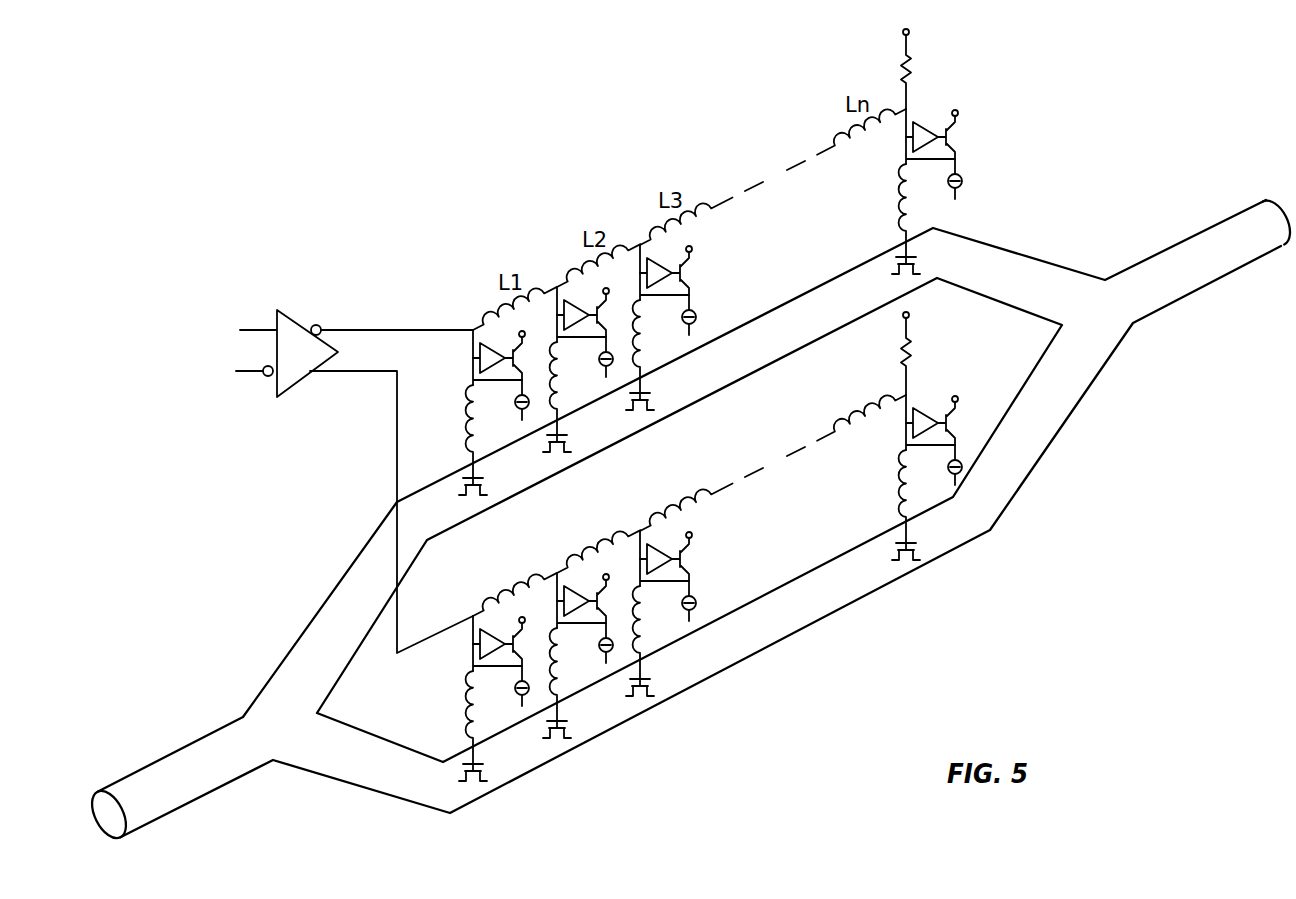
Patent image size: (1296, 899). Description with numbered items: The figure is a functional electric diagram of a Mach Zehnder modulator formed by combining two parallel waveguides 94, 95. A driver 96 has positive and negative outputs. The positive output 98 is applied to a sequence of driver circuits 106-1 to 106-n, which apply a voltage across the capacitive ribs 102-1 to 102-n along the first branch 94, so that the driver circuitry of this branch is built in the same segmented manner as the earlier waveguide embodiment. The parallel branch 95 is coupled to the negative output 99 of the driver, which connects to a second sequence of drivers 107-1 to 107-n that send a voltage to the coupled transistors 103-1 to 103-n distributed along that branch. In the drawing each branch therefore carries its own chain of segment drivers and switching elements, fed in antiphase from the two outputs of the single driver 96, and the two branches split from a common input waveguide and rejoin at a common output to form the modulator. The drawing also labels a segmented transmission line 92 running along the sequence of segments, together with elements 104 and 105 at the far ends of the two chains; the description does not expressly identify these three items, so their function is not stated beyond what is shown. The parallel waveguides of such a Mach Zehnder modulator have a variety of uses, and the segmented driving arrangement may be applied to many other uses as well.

The segmented transmission line 92 is at (766, 180).
The first branch waveguide 94 is at (368, 768).
The parallel branch waveguide 95 is at (1034, 268).
The driver 96 is at (297, 321).
The positive output 98 is at (397, 420).
The negative output 99 is at (393, 330).
The capacitive rib 102-1 is at (484, 776).
The capacitive rib 102-n is at (917, 548).
The coupled transistor 103-1 is at (484, 489).
The coupled transistor 103-n is at (893, 263).
The lower arm termination resistor 104 is at (912, 354).
The upper arm termination resistor 105 is at (913, 78).
The driver circuit 106-1 is at (480, 648).
The driver circuit 106-n is at (913, 427).
The driver 107-1 is at (480, 360).
The driver 107-n is at (912, 140).